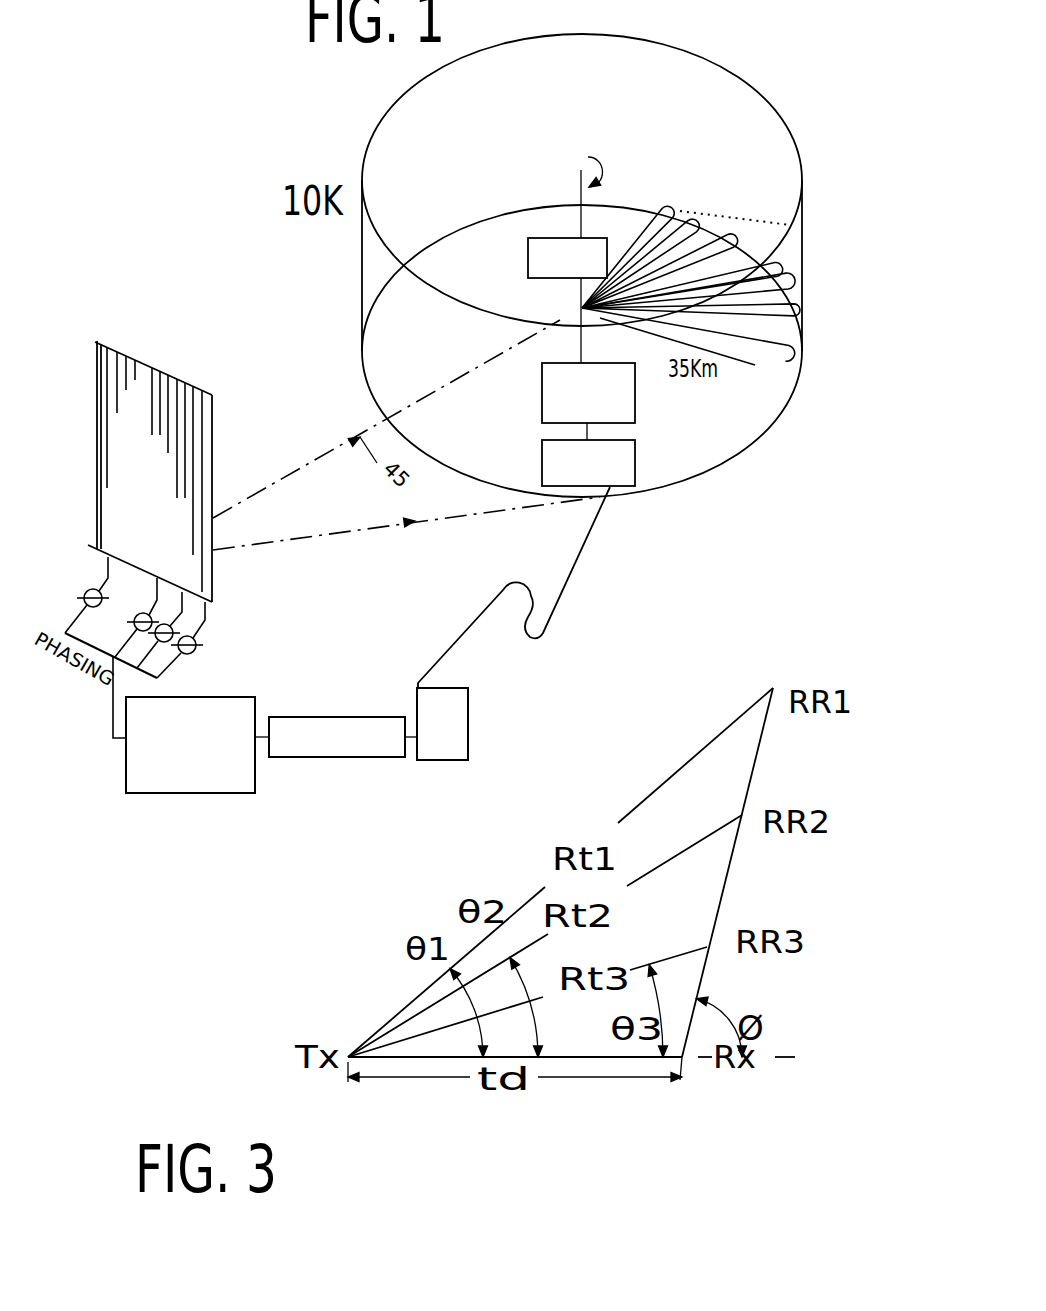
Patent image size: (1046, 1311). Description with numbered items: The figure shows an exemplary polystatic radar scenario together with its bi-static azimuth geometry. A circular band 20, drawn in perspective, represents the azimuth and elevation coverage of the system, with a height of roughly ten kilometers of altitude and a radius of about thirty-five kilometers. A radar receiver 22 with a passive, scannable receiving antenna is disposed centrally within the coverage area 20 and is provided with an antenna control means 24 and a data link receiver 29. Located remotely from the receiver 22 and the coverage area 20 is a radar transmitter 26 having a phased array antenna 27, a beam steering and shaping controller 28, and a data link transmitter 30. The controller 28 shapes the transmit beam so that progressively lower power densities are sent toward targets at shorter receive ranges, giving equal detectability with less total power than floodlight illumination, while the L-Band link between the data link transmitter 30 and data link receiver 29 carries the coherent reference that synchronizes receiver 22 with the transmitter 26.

The circular band 20 is at (363, 273).
The radar receiver 22 is at (542, 398).
The antenna control means 24 is at (528, 272).
The radar transmitter 26 is at (333, 717).
The phased array antenna 27 is at (105, 340).
The beam steering and shaping controller 28 is at (132, 793).
The data link receiver 29 is at (635, 466).
The data link transmitter 30 is at (468, 738).